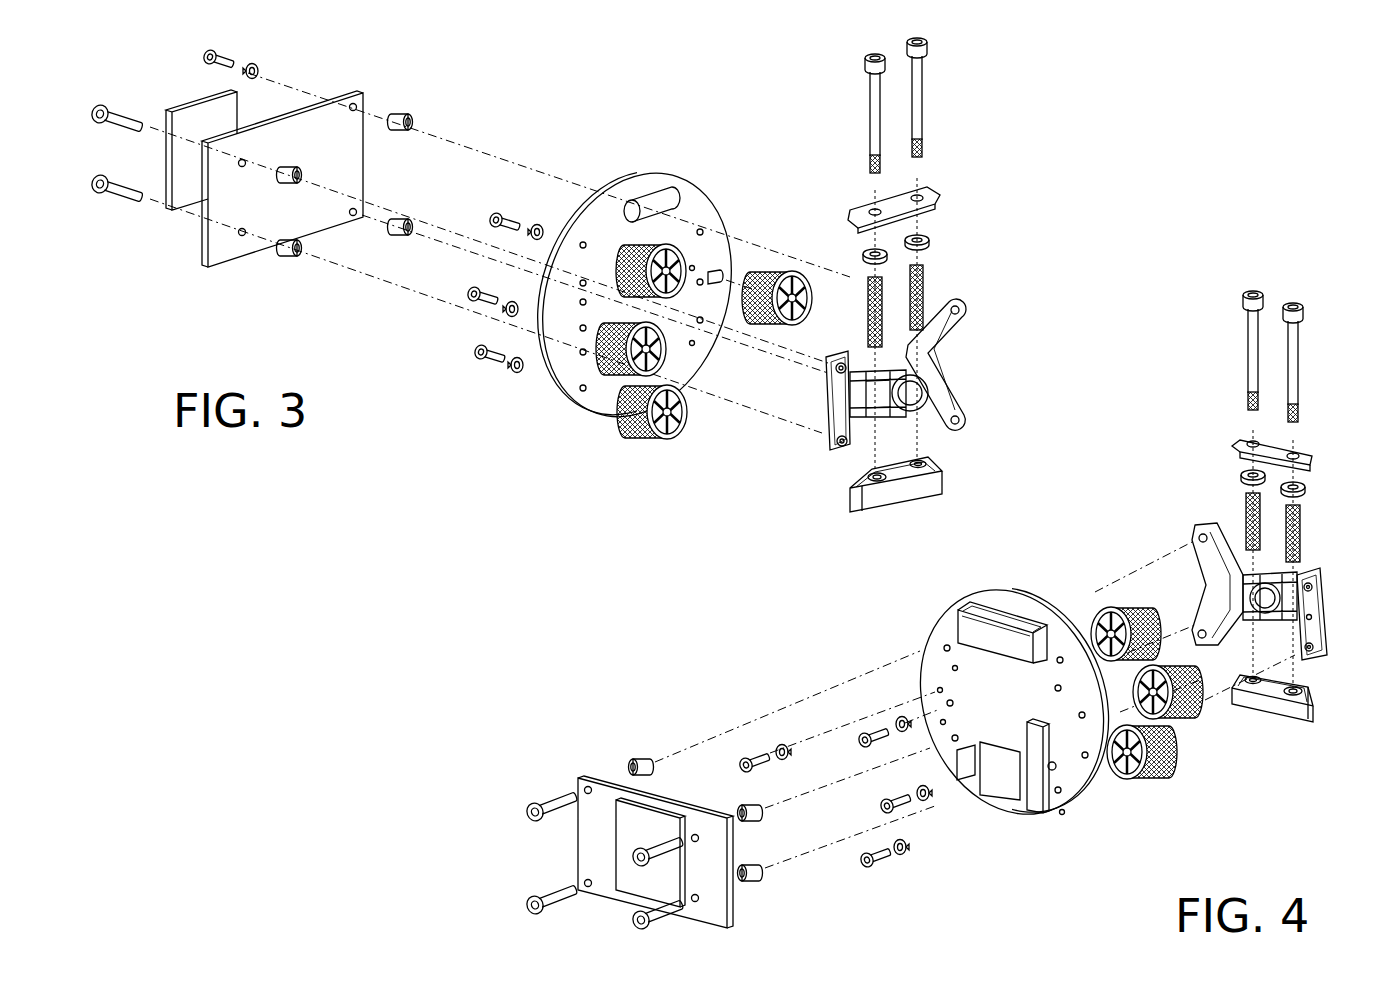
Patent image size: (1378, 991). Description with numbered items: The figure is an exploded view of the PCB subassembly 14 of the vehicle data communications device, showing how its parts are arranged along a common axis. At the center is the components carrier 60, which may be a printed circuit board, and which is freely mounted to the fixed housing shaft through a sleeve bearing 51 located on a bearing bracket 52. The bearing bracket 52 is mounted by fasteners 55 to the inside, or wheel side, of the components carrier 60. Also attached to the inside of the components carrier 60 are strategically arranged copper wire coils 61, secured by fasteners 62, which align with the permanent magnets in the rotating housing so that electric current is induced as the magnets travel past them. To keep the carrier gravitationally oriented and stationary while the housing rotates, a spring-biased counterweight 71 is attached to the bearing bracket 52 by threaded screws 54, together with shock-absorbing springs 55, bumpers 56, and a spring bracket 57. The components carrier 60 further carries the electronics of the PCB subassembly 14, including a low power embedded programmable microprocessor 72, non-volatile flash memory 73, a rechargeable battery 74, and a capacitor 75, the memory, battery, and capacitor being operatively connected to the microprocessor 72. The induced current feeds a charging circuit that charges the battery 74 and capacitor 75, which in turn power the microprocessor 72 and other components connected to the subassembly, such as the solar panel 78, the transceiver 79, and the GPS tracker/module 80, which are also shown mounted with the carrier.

In FIG. 3, the PCB subassembly 14 is at (583, 163).
In FIG. 4, the PCB subassembly 14 is at (1030, 594).
In FIG. 3, the sleeve bearing 51 is at (914, 398).
In FIG. 3, the bearing bracket 52 is at (960, 345).
In FIG. 4, the bearing bracket 52 is at (1312, 572).
In FIG. 3, the threaded screws 54 is at (912, 42).
In FIG. 4, the threaded screws 54 is at (1290, 305).
In FIG. 3, the fasteners 55 is at (96, 180).
In FIG. 4, the fasteners 55 is at (557, 888).
In FIG. 3, the bumpers 56 is at (925, 238).
In FIG. 4, the bumpers 56 is at (1243, 477).
In FIG. 3, the spring bracket 57 is at (850, 222).
In FIG. 4, the spring bracket 57 is at (1247, 442).
In FIG. 3, the components carrier 60 is at (697, 183).
In FIG. 4, the components carrier 60 is at (925, 648).
In FIG. 3, the copper wire coils 61 is at (612, 370).
In FIG. 4, the copper wire coils 61 is at (1130, 612).
In FIG. 3, the fasteners 62 is at (478, 305).
In FIG. 4, the fasteners 62 is at (892, 812).
In FIG. 3, the spring-biased counterweight 71 is at (912, 500).
In FIG. 4, the spring-biased counterweight 71 is at (1270, 716).
In FIG. 4, the microprocessor 72 is at (968, 762).
In FIG. 4, the flash memory 73 is at (1022, 800).
In FIG. 4, the rechargeable battery 74 is at (1002, 624).
In FIG. 3, the capacitor 75 is at (652, 200).
In FIG. 3, the solar panel 78 is at (212, 110).
In FIG. 4, the solar panel 78 is at (628, 872).
In FIG. 4, the transceiver 79 is at (1056, 766).
In FIG. 3, the GPS tracker/module 80 is at (320, 117).
In FIG. 4, the GPS tracker/module 80 is at (610, 795).